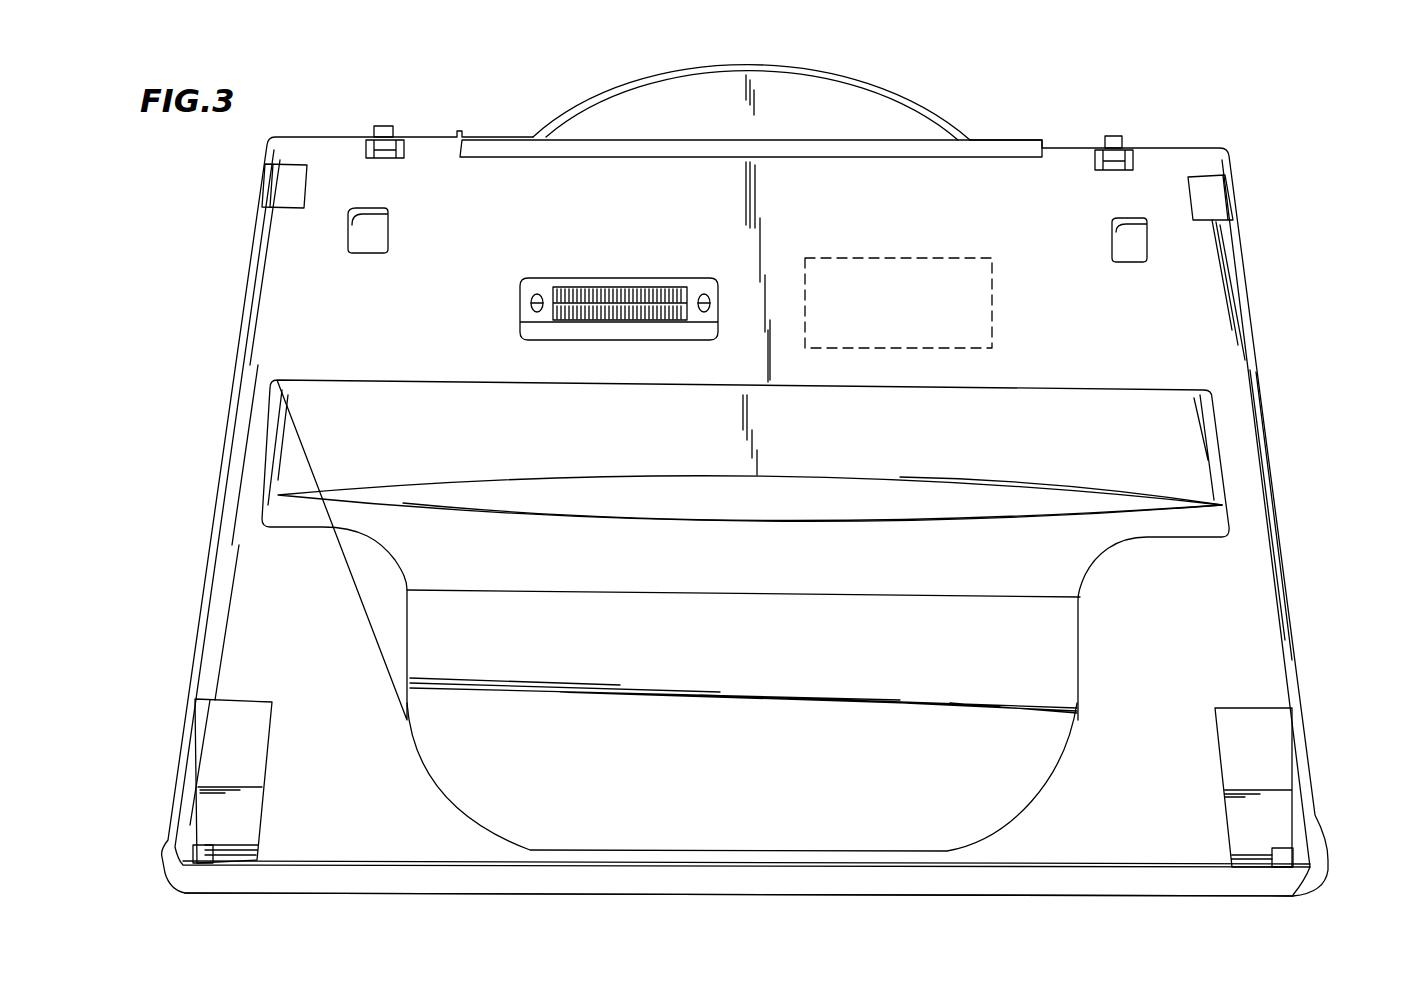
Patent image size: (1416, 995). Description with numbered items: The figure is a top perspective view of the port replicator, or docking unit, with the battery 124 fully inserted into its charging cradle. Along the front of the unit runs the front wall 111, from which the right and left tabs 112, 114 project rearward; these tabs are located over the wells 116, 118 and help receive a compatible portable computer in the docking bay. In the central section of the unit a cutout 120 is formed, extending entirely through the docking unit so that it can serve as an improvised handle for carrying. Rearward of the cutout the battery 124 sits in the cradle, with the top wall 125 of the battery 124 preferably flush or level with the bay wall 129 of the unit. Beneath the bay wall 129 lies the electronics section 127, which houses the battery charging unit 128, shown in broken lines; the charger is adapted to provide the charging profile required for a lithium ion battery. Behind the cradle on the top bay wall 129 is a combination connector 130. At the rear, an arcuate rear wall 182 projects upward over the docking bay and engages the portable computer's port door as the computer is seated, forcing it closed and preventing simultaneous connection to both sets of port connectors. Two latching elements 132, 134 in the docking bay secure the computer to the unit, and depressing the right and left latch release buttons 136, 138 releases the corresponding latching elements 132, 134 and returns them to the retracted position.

The front wall 111 is at (1005, 883).
The right tab 112 is at (1282, 860).
The left tab 114 is at (202, 853).
The well 116 is at (1305, 830).
The well 118 is at (262, 817).
The cutout 120 is at (763, 830).
The battery 124 is at (1193, 457).
The top wall of the battery 125 is at (1113, 472).
The electronics section 127 is at (1262, 302).
The battery charging unit 128 is at (900, 258).
The bay wall 129 is at (1053, 267).
The combination connector 130 is at (600, 280).
The right latching element 132 is at (1115, 130).
The left latching element 134 is at (386, 125).
The right latch release button 136 is at (1228, 200).
The left latch release button 138 is at (282, 195).
The rear wall 182 is at (858, 74).